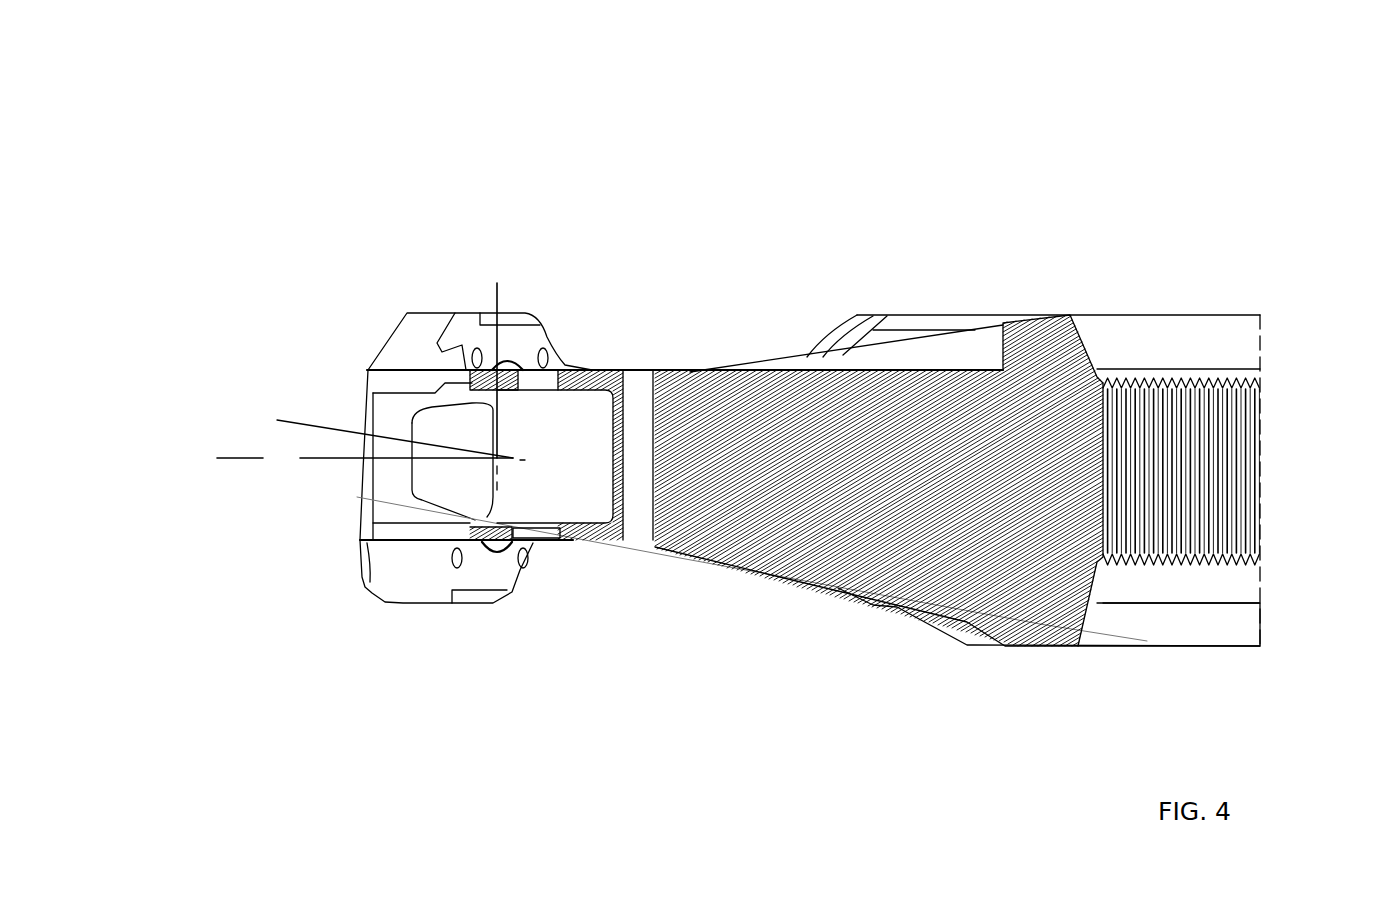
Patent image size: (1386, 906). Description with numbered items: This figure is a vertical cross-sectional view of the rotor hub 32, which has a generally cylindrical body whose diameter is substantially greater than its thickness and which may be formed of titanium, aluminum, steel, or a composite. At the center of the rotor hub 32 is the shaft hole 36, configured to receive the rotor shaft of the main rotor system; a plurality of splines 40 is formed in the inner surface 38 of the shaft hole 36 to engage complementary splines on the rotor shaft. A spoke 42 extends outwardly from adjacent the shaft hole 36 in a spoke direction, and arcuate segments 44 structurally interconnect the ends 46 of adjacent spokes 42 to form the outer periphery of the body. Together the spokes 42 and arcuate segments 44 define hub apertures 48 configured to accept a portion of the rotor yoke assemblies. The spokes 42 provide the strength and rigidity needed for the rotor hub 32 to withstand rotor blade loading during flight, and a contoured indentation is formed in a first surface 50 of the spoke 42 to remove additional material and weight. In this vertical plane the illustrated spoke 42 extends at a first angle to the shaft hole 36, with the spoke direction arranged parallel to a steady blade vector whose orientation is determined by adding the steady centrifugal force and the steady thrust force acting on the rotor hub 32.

The rotor hub 32 is at (1107, 120).
The shaft hole 36 is at (1190, 367).
The inner surface 38 is at (1218, 585).
The splines 40 is at (1215, 507).
The spoke 42 is at (703, 523).
The arcuate segment 44 is at (365, 396).
The ends of spokes 46 is at (480, 542).
The hub aperture 48 is at (280, 555).
The first surface 50 is at (787, 358).